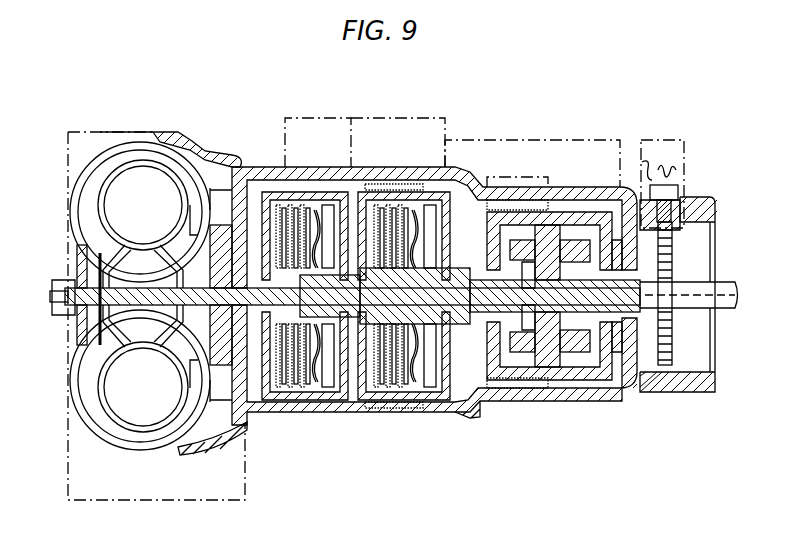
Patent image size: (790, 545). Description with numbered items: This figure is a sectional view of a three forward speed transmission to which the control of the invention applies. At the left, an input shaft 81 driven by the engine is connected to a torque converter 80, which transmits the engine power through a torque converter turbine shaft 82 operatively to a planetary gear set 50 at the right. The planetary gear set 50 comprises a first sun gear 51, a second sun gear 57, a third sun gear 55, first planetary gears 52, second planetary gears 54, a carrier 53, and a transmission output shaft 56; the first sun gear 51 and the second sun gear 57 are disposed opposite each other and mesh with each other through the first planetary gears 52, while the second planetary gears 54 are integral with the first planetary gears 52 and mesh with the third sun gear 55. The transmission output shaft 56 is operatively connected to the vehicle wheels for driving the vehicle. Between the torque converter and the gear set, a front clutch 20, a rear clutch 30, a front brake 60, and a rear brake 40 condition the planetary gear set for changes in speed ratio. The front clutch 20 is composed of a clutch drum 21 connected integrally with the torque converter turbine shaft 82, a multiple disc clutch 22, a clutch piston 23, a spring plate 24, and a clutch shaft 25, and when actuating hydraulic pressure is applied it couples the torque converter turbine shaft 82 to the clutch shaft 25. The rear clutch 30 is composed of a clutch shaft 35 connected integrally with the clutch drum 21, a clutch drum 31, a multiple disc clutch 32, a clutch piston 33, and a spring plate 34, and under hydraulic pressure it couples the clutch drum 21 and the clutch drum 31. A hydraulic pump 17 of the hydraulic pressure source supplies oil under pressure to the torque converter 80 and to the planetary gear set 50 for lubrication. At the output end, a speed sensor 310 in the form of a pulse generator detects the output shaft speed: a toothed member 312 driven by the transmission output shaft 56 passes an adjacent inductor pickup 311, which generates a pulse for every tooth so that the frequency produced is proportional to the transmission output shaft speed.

The hydraulic pump 17 is at (205, 395).
The front clutch 20 is at (340, 118).
The clutch drum 21 is at (268, 405).
The multiple disc clutch 22 is at (288, 400).
The clutch piston 23 is at (312, 395).
The spring plate 24 is at (318, 395).
The clutch shaft 25 is at (340, 400).
The rear clutch 30 is at (385, 118).
The clutch drum 31 is at (360, 405).
The multiple disc clutch 32 is at (390, 400).
The clutch piston 33 is at (420, 400).
The spring plate 34 is at (412, 395).
The clutch shaft 35 is at (445, 400).
The rear brake 40 is at (516, 177).
The planetary gear set 50 is at (480, 140).
The first sun gear 51 is at (596, 370).
The first planetary gears 52 is at (552, 375).
The carrier 53 is at (518, 365).
The second planetary gears 54 is at (572, 375).
The third sun gear 55 is at (620, 385).
The transmission output shaft 56 is at (690, 308).
The second sun gear 57 is at (530, 372).
The front brake 60 is at (392, 185).
The torque converter 80 is at (84, 132).
The input shaft 81 is at (72, 275).
The torque converter turbine shaft 82 is at (72, 315).
The speed sensor 310 is at (672, 140).
The inductor pickup 311 is at (684, 186).
The toothed member 312 is at (672, 252).